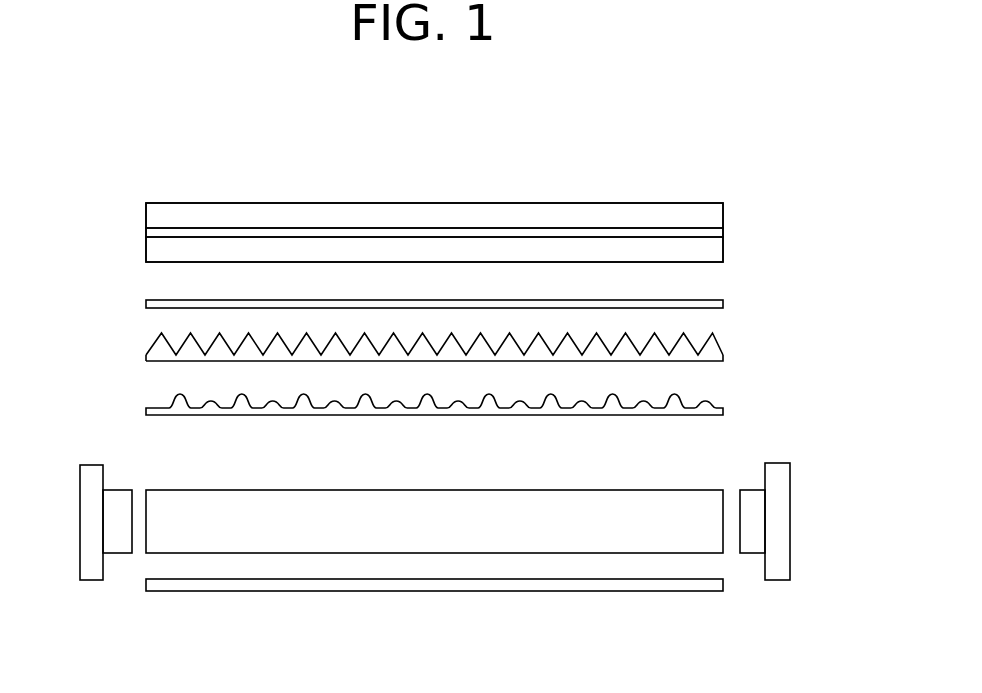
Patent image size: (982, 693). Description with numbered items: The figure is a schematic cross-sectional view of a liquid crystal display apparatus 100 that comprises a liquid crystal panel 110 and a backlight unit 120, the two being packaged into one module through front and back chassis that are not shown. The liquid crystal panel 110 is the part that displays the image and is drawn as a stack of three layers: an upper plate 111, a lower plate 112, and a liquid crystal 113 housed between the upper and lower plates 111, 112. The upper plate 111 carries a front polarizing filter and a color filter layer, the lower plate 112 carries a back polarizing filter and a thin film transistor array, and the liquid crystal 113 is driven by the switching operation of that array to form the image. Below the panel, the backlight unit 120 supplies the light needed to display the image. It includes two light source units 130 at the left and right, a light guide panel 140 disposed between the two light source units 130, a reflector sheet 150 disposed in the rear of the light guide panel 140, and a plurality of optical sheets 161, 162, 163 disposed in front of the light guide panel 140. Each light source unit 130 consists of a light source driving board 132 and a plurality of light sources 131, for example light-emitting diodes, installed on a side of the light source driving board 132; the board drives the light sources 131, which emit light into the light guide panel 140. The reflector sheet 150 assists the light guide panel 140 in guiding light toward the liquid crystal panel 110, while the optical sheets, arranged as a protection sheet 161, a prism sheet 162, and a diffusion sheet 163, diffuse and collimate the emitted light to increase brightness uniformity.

The LCD apparatus 100 is at (468, 133).
The liquid crystal panel 110 is at (433, 217).
The upper plate 111 is at (723, 213).
The lower plate 112 is at (723, 252).
The liquid crystal 113 is at (723, 232).
The backlight unit 120 is at (402, 358).
The protection sheet 161 is at (723, 304).
The prism sheet 162 is at (723, 355).
The diffusion sheet 163 is at (723, 409).
The light source unit 130 is at (449, 531).
The light source 131 is at (120, 497).
The light source driving board 132 is at (92, 472).
The light guide panel 140 is at (196, 500).
The reflector sheet 150 is at (702, 586).